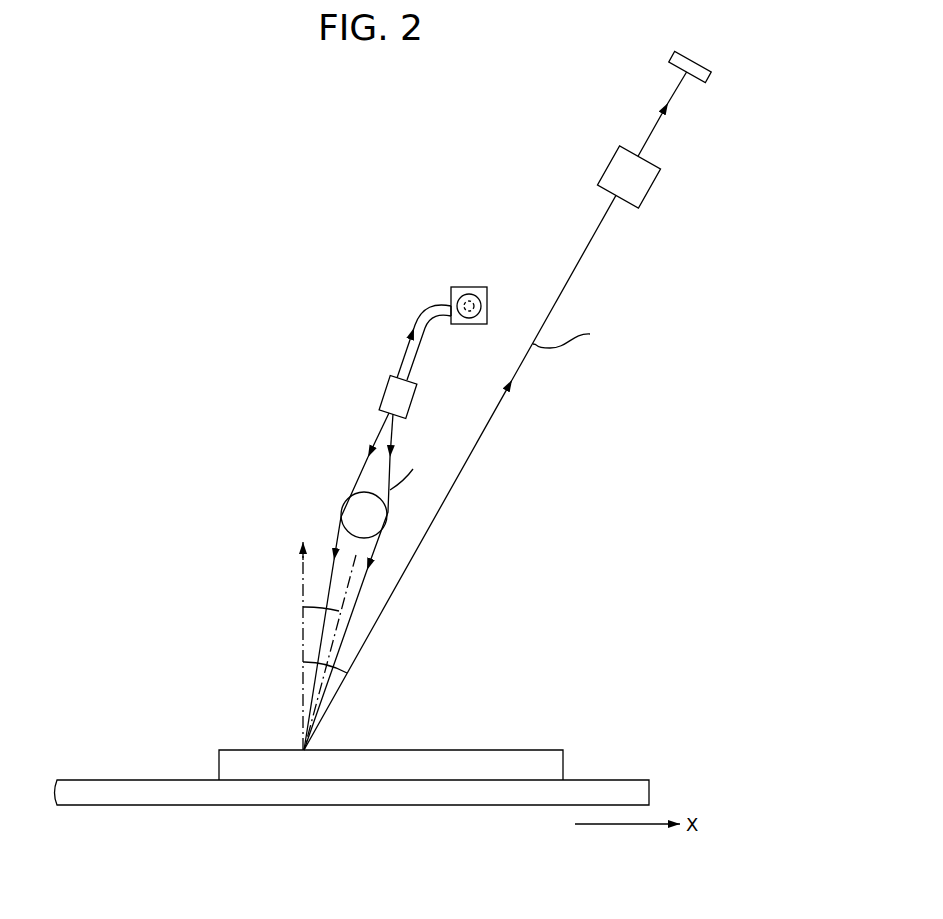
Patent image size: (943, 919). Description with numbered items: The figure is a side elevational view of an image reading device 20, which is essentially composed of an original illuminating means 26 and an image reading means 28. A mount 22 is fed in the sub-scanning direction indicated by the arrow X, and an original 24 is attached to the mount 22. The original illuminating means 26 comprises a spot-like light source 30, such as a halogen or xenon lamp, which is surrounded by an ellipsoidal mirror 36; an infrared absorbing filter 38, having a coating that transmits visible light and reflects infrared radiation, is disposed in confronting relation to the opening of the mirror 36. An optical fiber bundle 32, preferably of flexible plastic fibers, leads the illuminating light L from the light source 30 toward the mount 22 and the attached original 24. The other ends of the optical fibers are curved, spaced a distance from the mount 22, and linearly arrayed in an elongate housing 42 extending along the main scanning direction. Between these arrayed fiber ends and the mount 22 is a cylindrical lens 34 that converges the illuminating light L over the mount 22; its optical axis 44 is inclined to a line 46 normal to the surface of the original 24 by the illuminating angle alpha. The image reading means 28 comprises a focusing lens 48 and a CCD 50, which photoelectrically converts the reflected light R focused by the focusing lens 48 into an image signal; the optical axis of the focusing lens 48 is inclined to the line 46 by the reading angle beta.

The image reading device 20 is at (272, 265).
The mount 22 is at (298, 792).
The original 24 is at (508, 765).
The original illuminating means 26 is at (346, 554).
The image reading means 28 is at (549, 385).
The light source 30 is at (476, 272).
The optical fiber bundle 32 is at (415, 318).
The cylindrical lens 34 is at (352, 503).
The ellipsoidal mirror 36 is at (458, 297).
The infrared absorbing filter 38 is at (452, 322).
The elongate housing 42 is at (393, 388).
The optical axis 44 is at (345, 599).
The normal line 46 is at (302, 627).
The focusing lens 48 is at (640, 183).
The CCD 50 is at (700, 67).